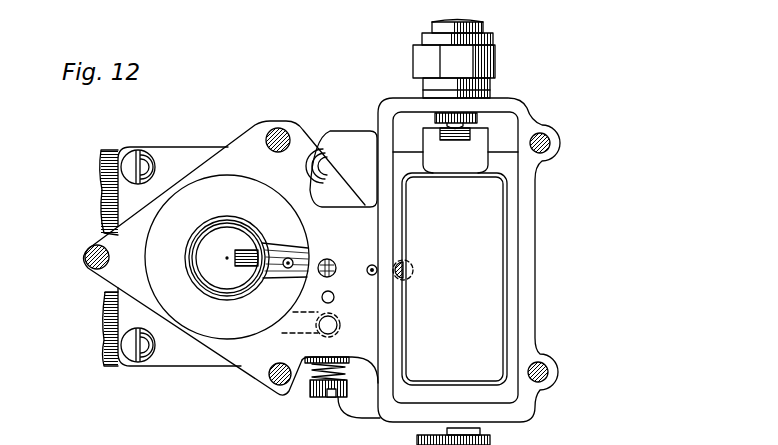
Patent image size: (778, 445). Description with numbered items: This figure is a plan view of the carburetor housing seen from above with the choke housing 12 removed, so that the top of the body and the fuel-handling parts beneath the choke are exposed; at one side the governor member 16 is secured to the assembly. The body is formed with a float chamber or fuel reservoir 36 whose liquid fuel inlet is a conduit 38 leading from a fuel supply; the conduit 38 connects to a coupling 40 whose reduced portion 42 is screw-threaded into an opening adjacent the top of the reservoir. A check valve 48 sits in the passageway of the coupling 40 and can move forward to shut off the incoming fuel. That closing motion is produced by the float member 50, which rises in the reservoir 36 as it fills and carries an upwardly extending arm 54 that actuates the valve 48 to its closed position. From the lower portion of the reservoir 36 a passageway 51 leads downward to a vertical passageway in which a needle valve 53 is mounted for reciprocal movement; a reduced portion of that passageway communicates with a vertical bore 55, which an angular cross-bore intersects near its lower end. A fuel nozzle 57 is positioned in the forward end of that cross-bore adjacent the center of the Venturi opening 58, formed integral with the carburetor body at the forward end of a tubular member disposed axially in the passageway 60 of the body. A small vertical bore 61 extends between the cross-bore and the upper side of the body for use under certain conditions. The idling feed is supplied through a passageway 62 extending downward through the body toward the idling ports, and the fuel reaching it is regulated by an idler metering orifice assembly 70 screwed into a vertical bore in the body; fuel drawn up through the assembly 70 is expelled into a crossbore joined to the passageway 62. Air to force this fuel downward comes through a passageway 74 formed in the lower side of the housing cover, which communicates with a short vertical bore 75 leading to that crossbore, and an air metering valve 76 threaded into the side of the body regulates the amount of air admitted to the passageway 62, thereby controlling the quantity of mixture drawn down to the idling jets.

The choke housing 12 is at (526, 322).
The governor member 16 is at (110, 192).
The fuel reservoir 36 is at (518, 242).
The conduit 38 is at (470, 26).
The coupling 40 is at (494, 62).
The reduced portion 42 is at (490, 114).
The check valve 48 is at (455, 117).
The float member 50 is at (493, 283).
The passageway 51 is at (413, 272).
The needle valve 53 is at (376, 274).
The upwardly extending arm 54 is at (440, 142).
The vertical bore 55 is at (372, 264).
The fuel nozzle 57 is at (247, 253).
The Venturi opening 58 is at (205, 245).
The passageway 60 is at (194, 326).
The small vertical bore 61 is at (288, 257).
The passageway 62 is at (335, 297).
The idler metering orifice assembly 70 is at (327, 258).
The passageway 74 is at (282, 333).
The short vertical bore 75 is at (340, 326).
The air metering valve 76 is at (318, 386).